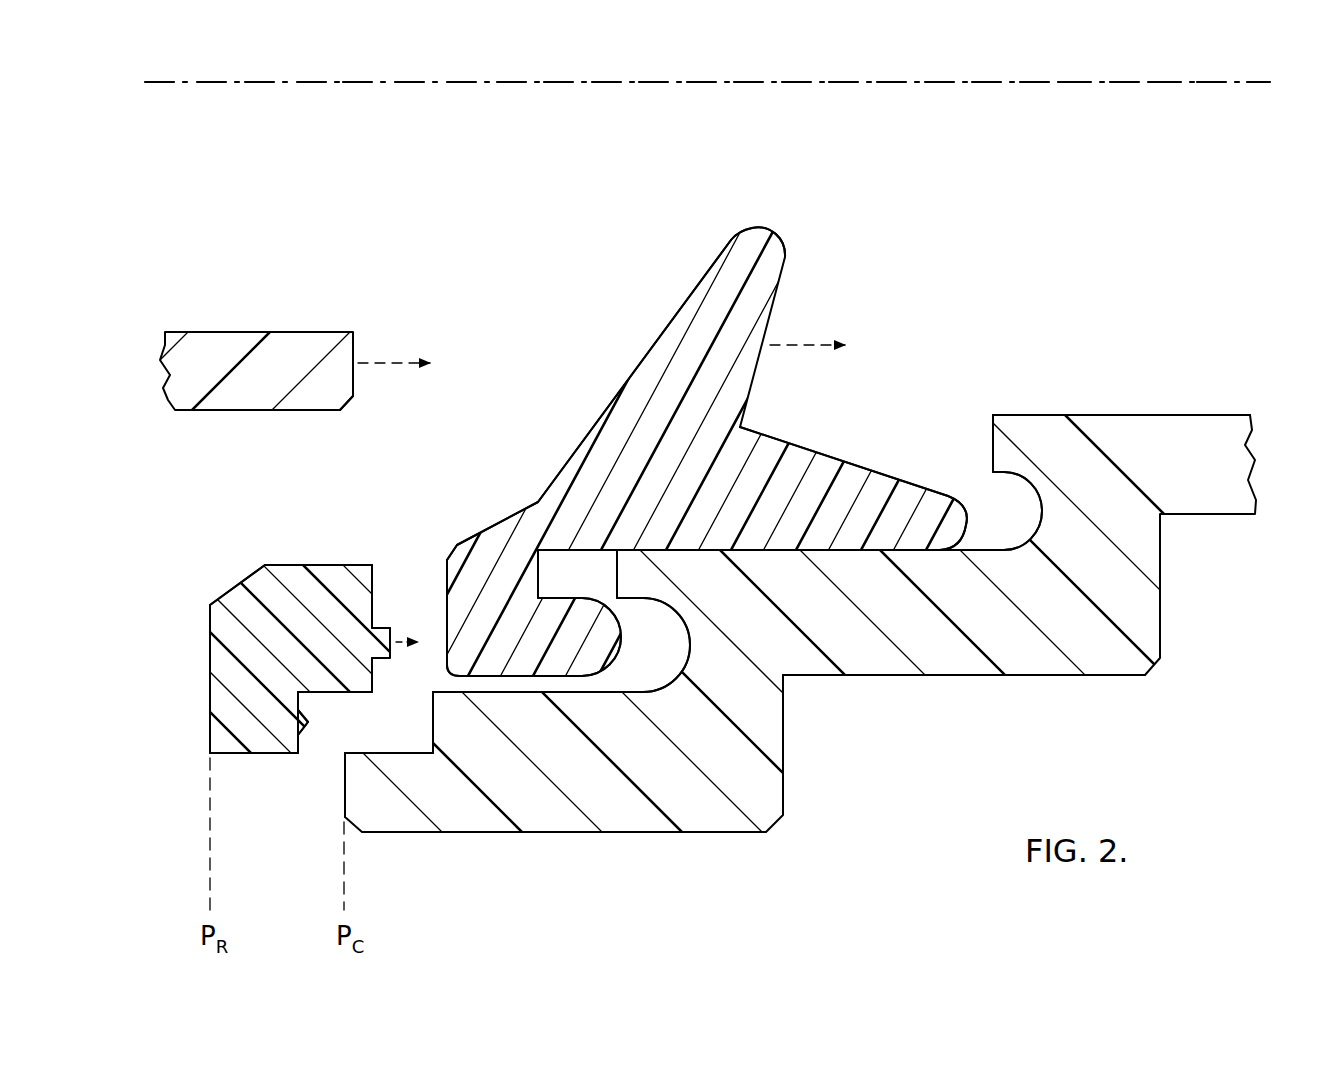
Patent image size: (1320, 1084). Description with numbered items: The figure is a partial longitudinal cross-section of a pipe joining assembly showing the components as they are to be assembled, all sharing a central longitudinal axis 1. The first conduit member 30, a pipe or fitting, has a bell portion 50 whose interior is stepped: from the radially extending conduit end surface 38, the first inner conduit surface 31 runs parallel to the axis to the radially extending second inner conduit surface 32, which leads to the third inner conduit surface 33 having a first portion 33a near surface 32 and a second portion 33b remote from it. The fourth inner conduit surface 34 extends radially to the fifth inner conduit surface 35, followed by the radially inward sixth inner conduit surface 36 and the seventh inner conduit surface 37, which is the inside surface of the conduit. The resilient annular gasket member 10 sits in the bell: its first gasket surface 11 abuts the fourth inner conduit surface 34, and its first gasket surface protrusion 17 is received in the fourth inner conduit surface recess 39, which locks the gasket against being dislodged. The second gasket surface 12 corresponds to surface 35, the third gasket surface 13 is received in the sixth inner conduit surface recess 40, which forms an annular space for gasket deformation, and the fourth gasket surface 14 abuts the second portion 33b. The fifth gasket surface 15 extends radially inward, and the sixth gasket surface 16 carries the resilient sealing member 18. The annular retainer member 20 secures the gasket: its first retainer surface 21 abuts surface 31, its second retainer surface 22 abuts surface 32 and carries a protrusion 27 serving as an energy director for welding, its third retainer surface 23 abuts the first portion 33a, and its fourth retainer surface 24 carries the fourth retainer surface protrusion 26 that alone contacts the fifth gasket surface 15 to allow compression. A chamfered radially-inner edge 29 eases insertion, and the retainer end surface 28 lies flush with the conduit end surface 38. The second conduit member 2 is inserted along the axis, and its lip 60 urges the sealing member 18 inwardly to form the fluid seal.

The central longitudinal axis 1 is at (352, 88).
The second conduit member 2 is at (222, 375).
The lip 60 is at (347, 410).
The resilient annular gasket member 10 is at (658, 423).
The resilient sealing member 18 is at (750, 256).
The sixth gasket surface 16 is at (625, 364).
The second gasket surface 12 is at (768, 543).
The third gasket surface 13 is at (952, 504).
The fifth gasket surface 15 is at (442, 578).
The first gasket surface 11 is at (534, 572).
The fourth gasket surface 14 is at (512, 670).
The first gasket surface protrusion 17 is at (619, 641).
The first conduit member 30 is at (1076, 631).
The sixth inner conduit surface 36 is at (1000, 450).
The seventh inner conduit surface 37 is at (1117, 417).
The sixth inner conduit surface recess 40 is at (1046, 517).
The fourth inner conduit surface 34 is at (624, 581).
The fourth inner conduit surface recess 39 is at (699, 641).
The fifth inner conduit surface 35 is at (819, 563).
The bell portion 50 is at (898, 690).
The annular retainer member 20 is at (248, 632).
The radially-inner edge 29 is at (244, 574).
The fourth retainer surface 24 is at (384, 598).
The retainer end surface 28 is at (209, 660).
The third retainer surface 23 is at (336, 690).
The second retainer surface 22 is at (298, 700).
The protrusion 27 is at (310, 725).
The fourth retainer surface protrusion 26 is at (394, 657).
The first retainer surface 21 is at (233, 757).
The conduit end surface 38 is at (342, 790).
The first inner conduit surface 31 is at (387, 754).
The second inner conduit surface 32 is at (436, 740).
The first portion of third inner conduit surface 33a is at (476, 694).
The third inner conduit surface 33 is at (551, 694).
The second portion of third inner conduit surface 33b is at (631, 694).